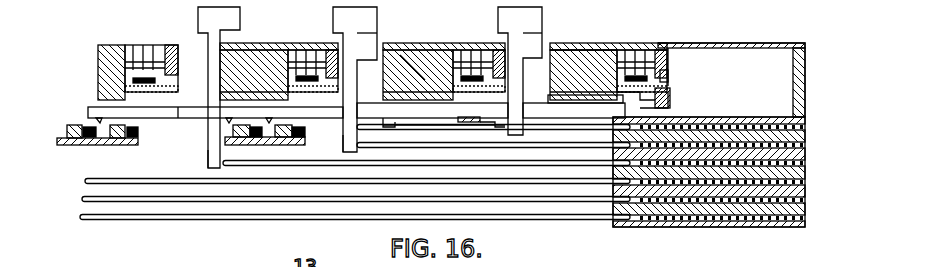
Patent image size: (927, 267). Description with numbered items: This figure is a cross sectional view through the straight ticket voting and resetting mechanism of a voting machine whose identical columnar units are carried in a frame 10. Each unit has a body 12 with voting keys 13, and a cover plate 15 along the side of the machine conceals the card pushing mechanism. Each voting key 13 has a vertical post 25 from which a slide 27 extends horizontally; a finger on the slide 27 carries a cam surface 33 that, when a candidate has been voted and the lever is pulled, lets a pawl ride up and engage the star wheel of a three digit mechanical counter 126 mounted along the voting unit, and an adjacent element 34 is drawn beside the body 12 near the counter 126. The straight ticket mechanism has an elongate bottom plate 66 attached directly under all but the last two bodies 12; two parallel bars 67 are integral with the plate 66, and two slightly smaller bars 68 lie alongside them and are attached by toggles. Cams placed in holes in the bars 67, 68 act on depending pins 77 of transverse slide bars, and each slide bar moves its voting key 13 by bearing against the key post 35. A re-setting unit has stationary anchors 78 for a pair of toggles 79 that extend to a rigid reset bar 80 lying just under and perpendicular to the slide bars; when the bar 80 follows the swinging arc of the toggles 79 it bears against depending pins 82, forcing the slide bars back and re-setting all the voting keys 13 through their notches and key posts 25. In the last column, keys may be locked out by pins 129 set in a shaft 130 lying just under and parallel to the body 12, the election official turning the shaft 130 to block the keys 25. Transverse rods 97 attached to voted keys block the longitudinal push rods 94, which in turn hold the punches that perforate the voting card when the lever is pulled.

The voting key 13 is at (242, 22).
The slide 27 is at (376, 61).
The depending pin 77 is at (100, 118).
The body 12 is at (421, 50).
The three digit mechanical counter 126 is at (486, 50).
The depending pin 82 is at (409, 74).
The yoke 34 is at (588, 48).
The cam surface 33 is at (453, 83).
The post 35 is at (550, 97).
The stationary anchor 78 is at (386, 121).
The toggle 79 is at (440, 127).
The reset bar 80 is at (492, 125).
The pin 129 is at (668, 76).
The shaft 130 is at (675, 108).
The elongate bottom plate 66 is at (68, 145).
The parallel bar 67 is at (70, 126).
The bar 68 is at (139, 132).
The vertical post 25 is at (208, 160).
The transverse rod 97 is at (576, 146).
The cover plate 15 is at (757, 43).
The frame 10 is at (805, 88).
The push rod 94 is at (806, 192).